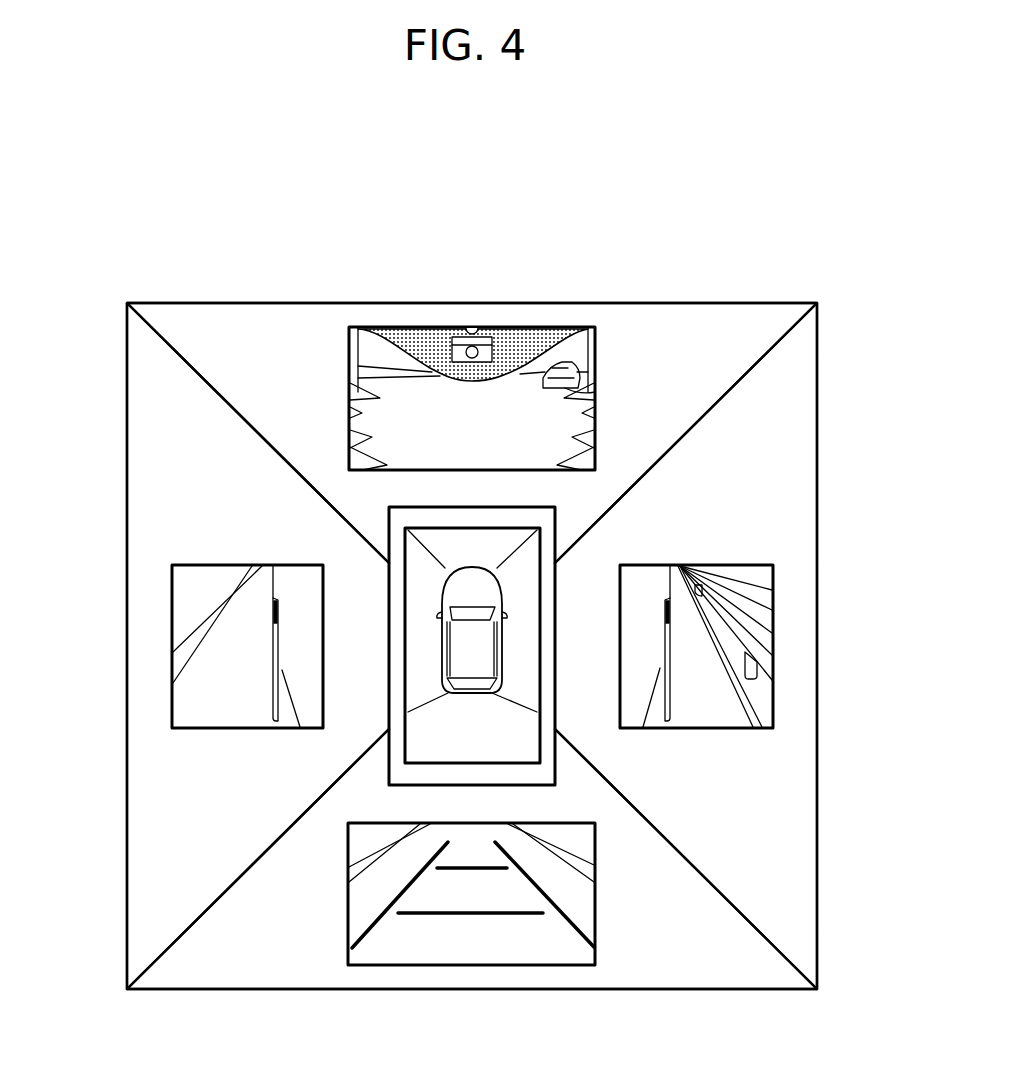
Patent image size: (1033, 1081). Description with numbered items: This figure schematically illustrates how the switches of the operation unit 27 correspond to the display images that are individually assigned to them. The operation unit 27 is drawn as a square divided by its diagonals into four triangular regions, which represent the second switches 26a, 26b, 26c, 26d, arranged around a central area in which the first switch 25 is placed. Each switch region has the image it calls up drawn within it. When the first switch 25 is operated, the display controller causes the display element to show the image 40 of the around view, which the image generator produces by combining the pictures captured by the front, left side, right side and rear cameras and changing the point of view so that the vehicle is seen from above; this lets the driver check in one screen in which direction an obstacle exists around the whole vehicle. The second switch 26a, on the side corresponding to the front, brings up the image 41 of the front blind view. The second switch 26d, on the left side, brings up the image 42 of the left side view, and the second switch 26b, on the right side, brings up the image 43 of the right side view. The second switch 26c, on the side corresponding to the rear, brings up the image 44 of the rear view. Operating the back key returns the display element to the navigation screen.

The operation unit 27 is at (469, 252).
The second switch 26a is at (670, 310).
The second switch 26b is at (795, 467).
The second switch 26c is at (688, 955).
The second switch 26d is at (147, 468).
The first switch 25 is at (550, 588).
The image of an around view 40 is at (503, 735).
The image of the front blind view 41 is at (373, 350).
The image of the left side view 42 is at (183, 625).
The image of the right side view 43 is at (763, 628).
The image of the rear view 44 is at (478, 942).